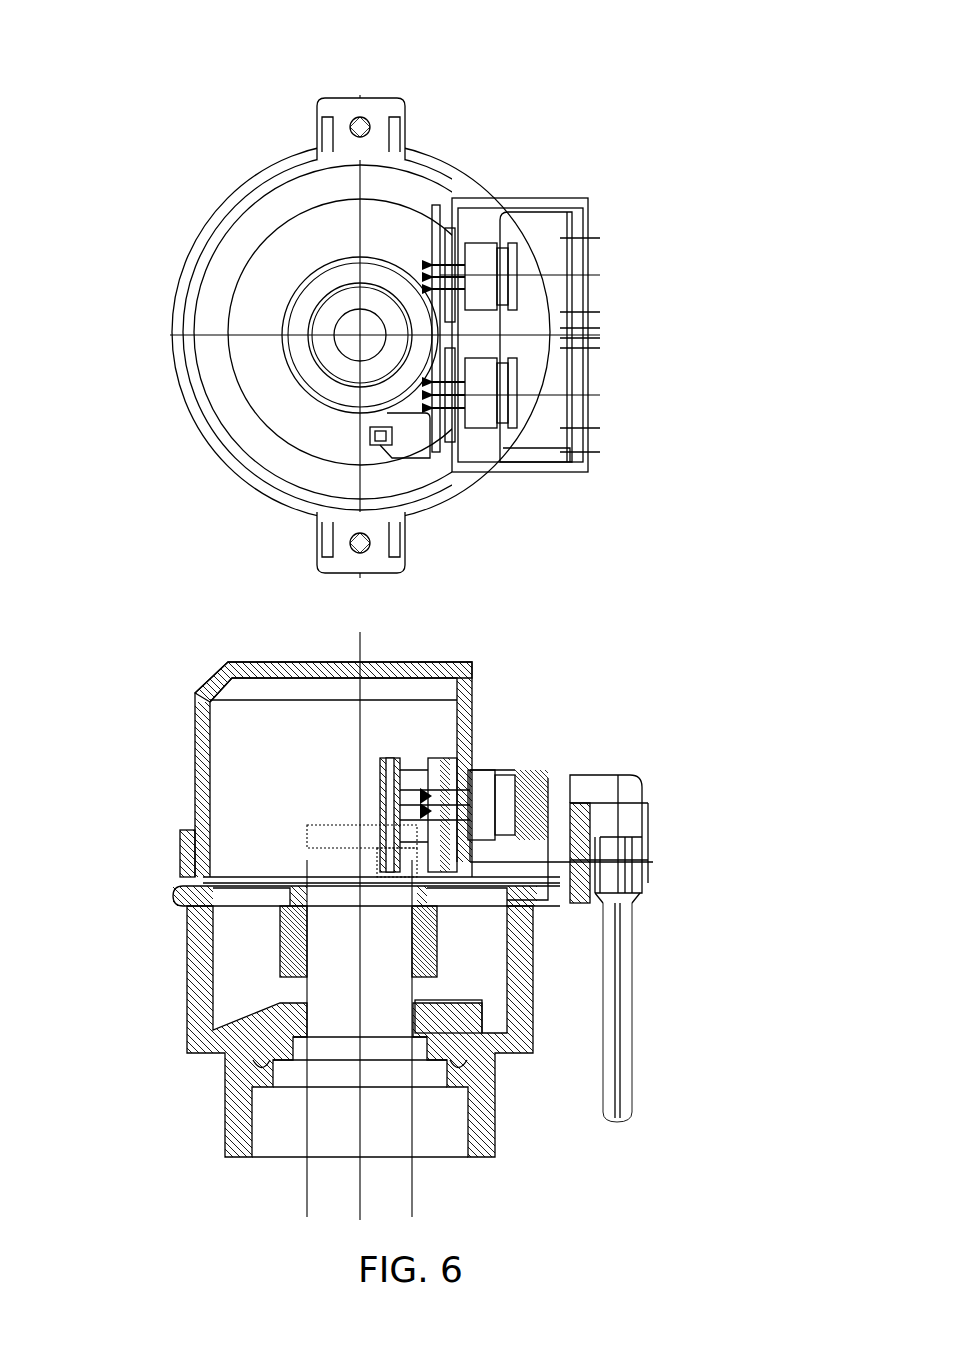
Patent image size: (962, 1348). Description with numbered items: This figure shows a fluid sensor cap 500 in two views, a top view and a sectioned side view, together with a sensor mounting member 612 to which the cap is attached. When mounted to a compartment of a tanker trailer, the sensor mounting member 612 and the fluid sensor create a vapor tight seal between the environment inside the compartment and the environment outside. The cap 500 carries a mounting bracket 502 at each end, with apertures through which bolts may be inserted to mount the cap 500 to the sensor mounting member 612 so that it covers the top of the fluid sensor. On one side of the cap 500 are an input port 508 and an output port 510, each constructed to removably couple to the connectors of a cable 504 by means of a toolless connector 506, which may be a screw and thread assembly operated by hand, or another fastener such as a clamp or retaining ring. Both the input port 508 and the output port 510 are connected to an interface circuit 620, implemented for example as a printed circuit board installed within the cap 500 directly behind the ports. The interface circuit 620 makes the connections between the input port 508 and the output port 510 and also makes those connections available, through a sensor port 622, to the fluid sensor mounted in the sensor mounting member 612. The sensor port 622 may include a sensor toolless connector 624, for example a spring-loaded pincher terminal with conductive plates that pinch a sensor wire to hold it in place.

The cap 500 is at (185, 412).
The mounting bracket 502 is at (180, 602).
The cable 504 is at (632, 975).
The toolless connector 506 is at (517, 228).
The input port 508 is at (477, 430).
The output port 510 is at (478, 243).
The sensor mounting member 612 is at (187, 1002).
The interface circuit 620 is at (434, 212).
The sensor port 622 is at (410, 462).
The sensor toolless connector 624 is at (392, 458).